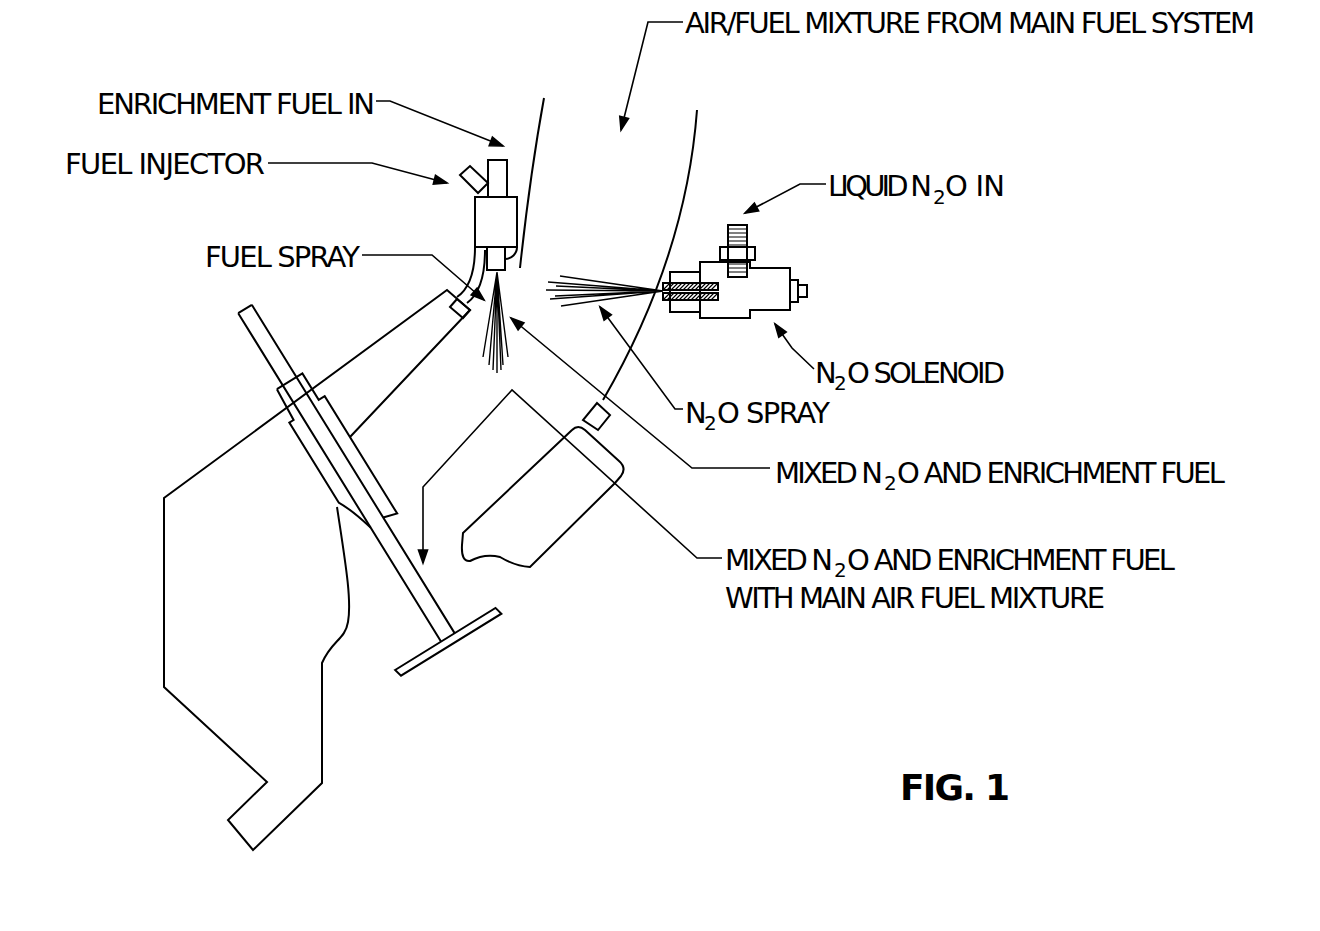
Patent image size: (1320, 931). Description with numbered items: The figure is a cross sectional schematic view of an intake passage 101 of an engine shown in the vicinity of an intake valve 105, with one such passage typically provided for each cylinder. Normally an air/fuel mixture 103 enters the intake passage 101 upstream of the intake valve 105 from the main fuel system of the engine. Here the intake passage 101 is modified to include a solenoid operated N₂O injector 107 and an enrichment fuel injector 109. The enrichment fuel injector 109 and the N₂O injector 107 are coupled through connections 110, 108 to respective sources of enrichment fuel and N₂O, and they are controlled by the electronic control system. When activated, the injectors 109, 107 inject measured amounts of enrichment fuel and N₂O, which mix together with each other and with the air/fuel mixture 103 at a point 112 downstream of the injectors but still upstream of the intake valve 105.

The intake passage 101 is at (686, 660).
The air/fuel mixture 103 is at (642, 127).
The intake valve 105 is at (450, 640).
The solenoid operated N₂O injector 107 is at (807, 292).
The connection 108 is at (745, 233).
The enrichment fuel injector 109 is at (482, 225).
The connection 110 is at (492, 160).
The mixing point 112 is at (512, 390).